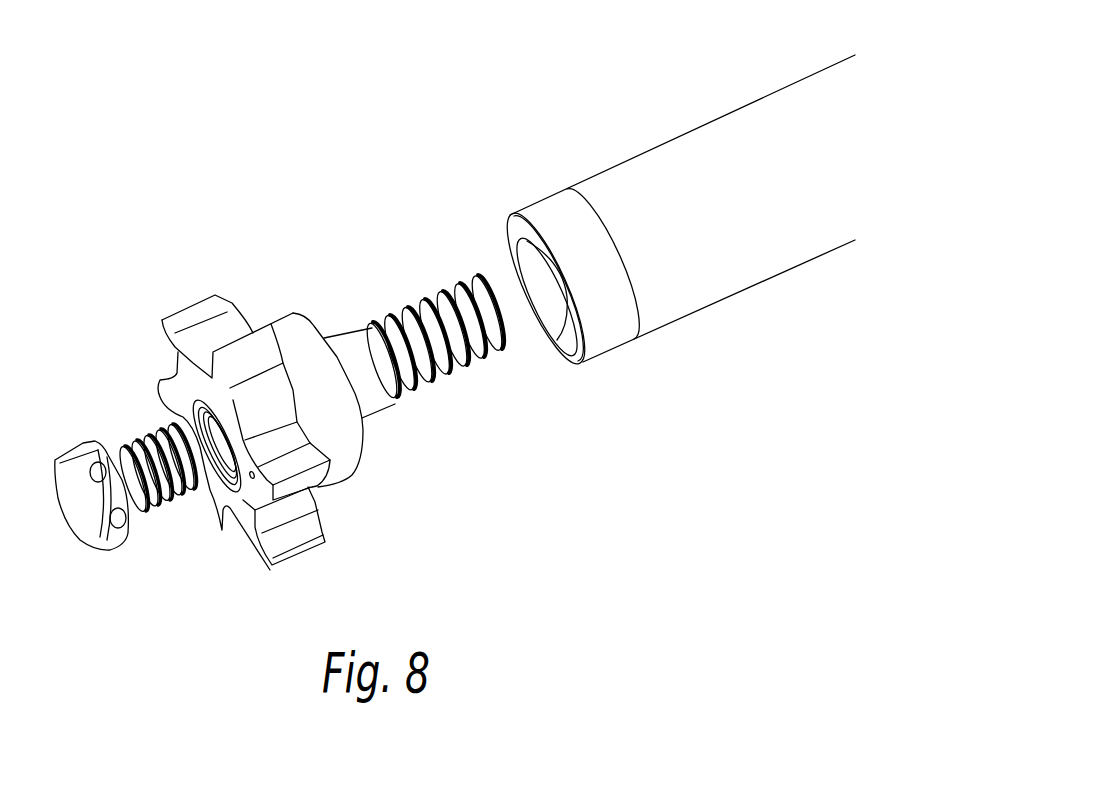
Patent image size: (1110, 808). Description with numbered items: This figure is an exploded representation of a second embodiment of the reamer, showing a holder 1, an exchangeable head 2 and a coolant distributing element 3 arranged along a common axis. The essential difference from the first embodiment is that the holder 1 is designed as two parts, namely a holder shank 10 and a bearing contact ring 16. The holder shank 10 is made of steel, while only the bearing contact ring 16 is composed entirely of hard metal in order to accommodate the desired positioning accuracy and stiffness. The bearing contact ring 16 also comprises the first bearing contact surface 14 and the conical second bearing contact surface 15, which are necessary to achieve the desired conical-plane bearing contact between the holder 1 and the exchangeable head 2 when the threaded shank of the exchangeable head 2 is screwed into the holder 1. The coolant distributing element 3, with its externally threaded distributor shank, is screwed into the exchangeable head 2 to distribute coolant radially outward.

The holder 1 is at (580, 60).
The exchangeable head 2 is at (255, 190).
The coolant distributing element 3 is at (60, 362).
The holder shank 10 is at (785, 346).
The first bearing contact surface 14 is at (517, 228).
The second bearing contact surface 15 is at (560, 331).
The bearing contact ring 16 is at (620, 407).